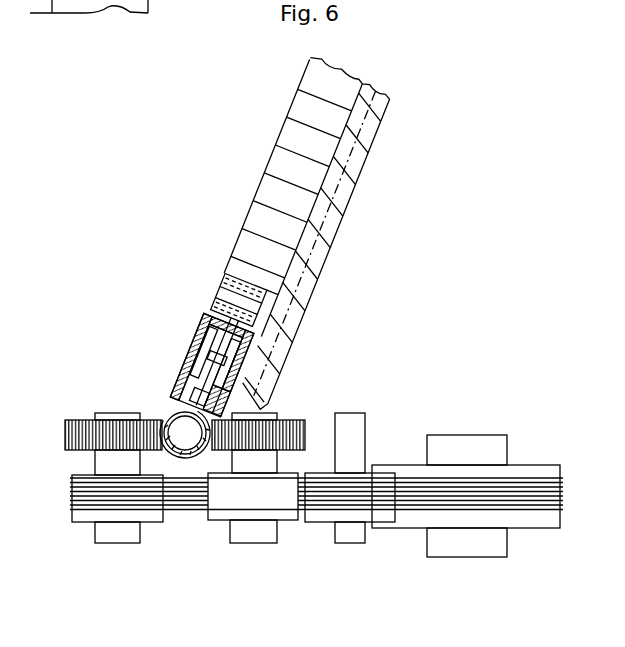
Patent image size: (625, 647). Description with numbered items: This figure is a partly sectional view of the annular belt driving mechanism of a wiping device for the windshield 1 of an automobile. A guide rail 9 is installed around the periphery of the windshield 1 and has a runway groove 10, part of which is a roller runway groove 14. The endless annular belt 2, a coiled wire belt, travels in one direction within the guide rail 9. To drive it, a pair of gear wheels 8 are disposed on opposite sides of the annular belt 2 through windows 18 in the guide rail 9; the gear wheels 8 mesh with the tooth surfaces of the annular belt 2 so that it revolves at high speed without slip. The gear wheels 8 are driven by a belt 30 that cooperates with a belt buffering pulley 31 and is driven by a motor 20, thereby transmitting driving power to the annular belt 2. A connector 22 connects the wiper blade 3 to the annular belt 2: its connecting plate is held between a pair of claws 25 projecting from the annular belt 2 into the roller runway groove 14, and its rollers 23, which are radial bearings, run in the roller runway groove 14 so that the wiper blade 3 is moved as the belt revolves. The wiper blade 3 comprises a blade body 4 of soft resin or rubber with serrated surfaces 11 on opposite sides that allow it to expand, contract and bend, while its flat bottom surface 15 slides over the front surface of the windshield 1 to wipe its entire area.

The windshield 1 is at (338, 183).
The annular belt 2 is at (180, 422).
The wiper blade 3 is at (278, 145).
The blade body 4 is at (288, 120).
The gear wheels 8 is at (82, 437).
The guide rail 9 is at (205, 332).
The runway groove 10 is at (215, 395).
The serrated surfaces 11 is at (320, 107).
The roller runway groove 14 is at (193, 378).
The flat bottom surface 15 is at (340, 147).
The windows 18 is at (160, 420).
The motor 20 is at (460, 543).
The connector 22 is at (233, 297).
The rollers 23 is at (228, 358).
The claws 25 is at (210, 400).
The belt 30 is at (420, 503).
The belt buffering pulley 31 is at (325, 515).